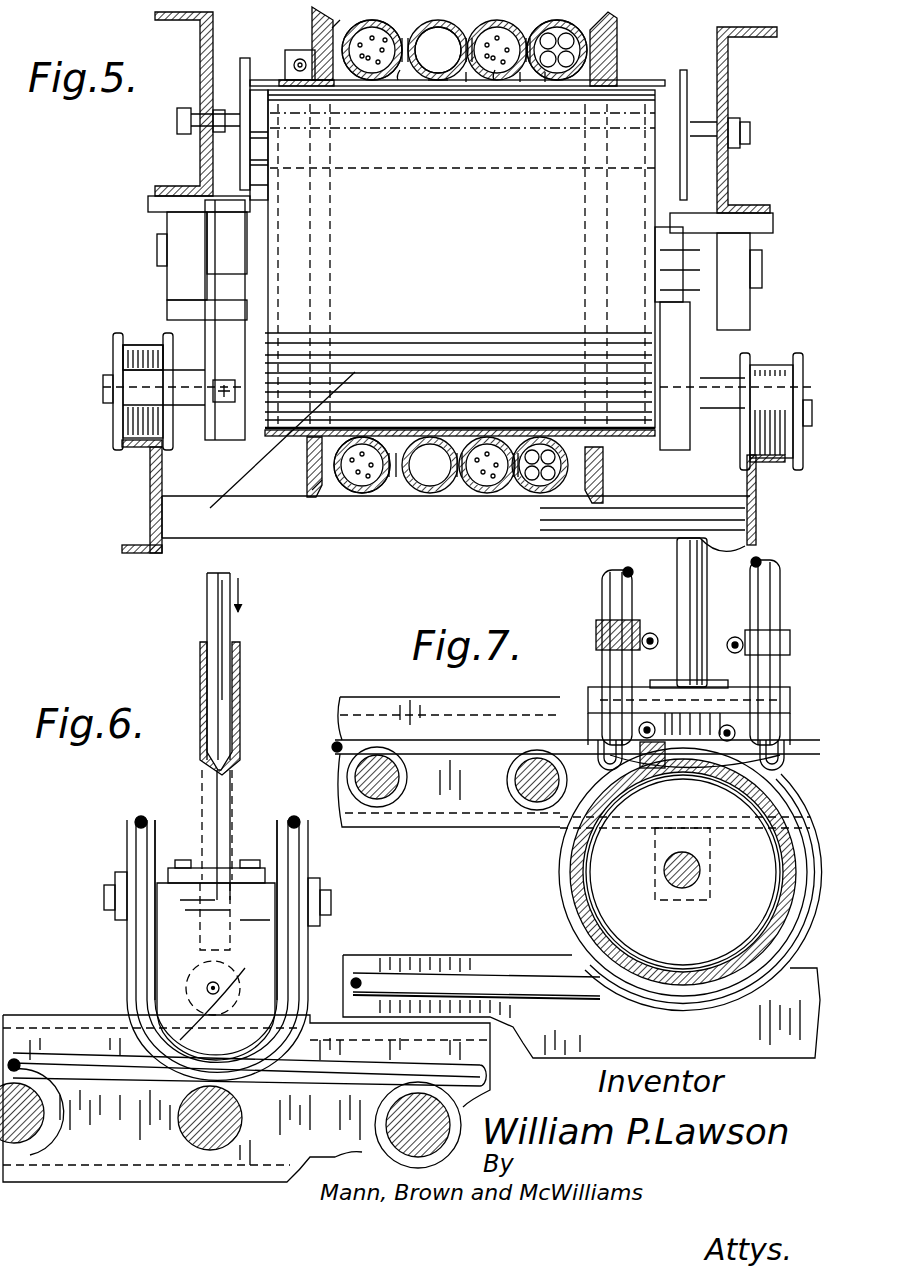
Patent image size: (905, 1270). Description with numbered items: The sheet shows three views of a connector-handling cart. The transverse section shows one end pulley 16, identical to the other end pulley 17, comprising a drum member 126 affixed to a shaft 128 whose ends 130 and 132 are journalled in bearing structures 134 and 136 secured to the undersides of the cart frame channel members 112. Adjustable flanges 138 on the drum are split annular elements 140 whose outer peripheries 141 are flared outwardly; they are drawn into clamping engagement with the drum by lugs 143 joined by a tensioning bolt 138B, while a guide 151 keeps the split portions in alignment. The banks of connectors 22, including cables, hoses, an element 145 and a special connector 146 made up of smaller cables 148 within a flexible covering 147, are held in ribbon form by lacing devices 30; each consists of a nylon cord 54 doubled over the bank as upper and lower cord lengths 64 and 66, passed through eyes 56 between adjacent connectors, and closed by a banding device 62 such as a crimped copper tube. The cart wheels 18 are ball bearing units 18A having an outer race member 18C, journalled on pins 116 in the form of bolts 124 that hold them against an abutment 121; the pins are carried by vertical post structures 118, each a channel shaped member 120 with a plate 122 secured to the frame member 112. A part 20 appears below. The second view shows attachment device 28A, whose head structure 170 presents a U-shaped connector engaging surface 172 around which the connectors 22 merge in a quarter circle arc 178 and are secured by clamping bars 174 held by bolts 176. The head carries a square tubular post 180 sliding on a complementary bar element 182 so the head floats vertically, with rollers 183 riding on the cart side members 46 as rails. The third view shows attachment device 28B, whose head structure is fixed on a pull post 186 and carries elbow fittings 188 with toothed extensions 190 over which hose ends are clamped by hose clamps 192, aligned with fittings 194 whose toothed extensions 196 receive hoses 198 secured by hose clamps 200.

In FIG. 5, the end pulley 16 is at (632, 214).
In FIG. 7, the end pulley 17 is at (800, 812).
In FIG. 5, the wheel 18 is at (112, 364).
In FIG. 5, the ball bearing unit 18A is at (116, 376).
In FIG. 5, the outer race member 18C is at (130, 425).
In FIG. 6, the base beam 20 is at (130, 1160).
In FIG. 6, the connector 22 is at (158, 838).
In FIG. 7, the connector 22 is at (448, 756).
In FIG. 6, the attachment device 28A is at (103, 882).
In FIG. 7, the attachment device 28B is at (596, 652).
In FIG. 5, the lacing device 30 is at (489, 24).
In FIG. 6, the cart side member 46 is at (312, 1010).
In FIG. 5, the nylon cord 54 is at (470, 80).
In FIG. 5, the eye 56 is at (404, 80).
In FIG. 5, the banding device 62 is at (358, 494).
In FIG. 5, the upper cord length 64 is at (465, 18).
In FIG. 5, the lower cord length 66 is at (440, 82).
In FIG. 5, the channel member 112 is at (200, 150).
In FIG. 5, the wheel pin 116 is at (102, 400).
In FIG. 5, the vertical post structure 118 is at (225, 318).
In FIG. 5, the channel shaped member 120 is at (224, 440).
In FIG. 5, the abutment 121 is at (160, 505).
In FIG. 5, the plate 122 is at (150, 205).
In FIG. 5, the bolt 124 is at (128, 455).
In FIG. 5, the drum member 126 is at (272, 450).
In FIG. 5, the shaft 128 is at (762, 254).
In FIG. 5, the shaft end 130 is at (763, 290).
In FIG. 5, the shaft end 132 is at (158, 244).
In FIG. 5, the bearing structure 134 is at (750, 318).
In FIG. 5, the bearing structure 136 is at (170, 294).
In FIG. 5, the adjustable flange 138 is at (312, 460).
In FIG. 5, the tensioning bolt 138B is at (300, 58).
In FIG. 5, the split annular element 140 is at (604, 475).
In FIG. 5, the outer periphery 141 is at (310, 492).
In FIG. 5, the lug 143 is at (285, 65).
In FIG. 5, the filled tube 145 is at (380, 42).
In FIG. 5, the special connector 146 is at (547, 80).
In FIG. 5, the flexible covering 147 is at (560, 72).
In FIG. 5, the smaller cable 148 is at (522, 80).
In FIG. 5, the guide 151 is at (318, 102).
In FIG. 6, the head structure 170 is at (185, 934).
In FIG. 6, the U-shaped connector engaging surface 172 is at (165, 968).
In FIG. 6, the clamping bar 174 is at (118, 872).
In FIG. 6, the bolt 176 is at (103, 900).
In FIG. 6, the quarter circle arc 178 is at (230, 1040).
In FIG. 6, the tubular post 180 is at (240, 680).
In FIG. 6, the bar element 182 is at (212, 617).
In FIG. 6, the roller 183 is at (205, 988).
In FIG. 7, the pull post 186 is at (698, 576).
In FIG. 7, the elbow fitting 188 is at (600, 738).
In FIG. 7, the toothed extension 190 is at (648, 740).
In FIG. 5, the hose clamp 192 is at (345, 22).
In FIG. 7, the hose clamp 192 is at (640, 768).
In FIG. 7, the fitting 194 is at (604, 672).
In FIG. 7, the toothed extension 196 is at (612, 625).
In FIG. 7, the hose 198 is at (622, 580).
In FIG. 7, the hose clamp 200 is at (658, 640).